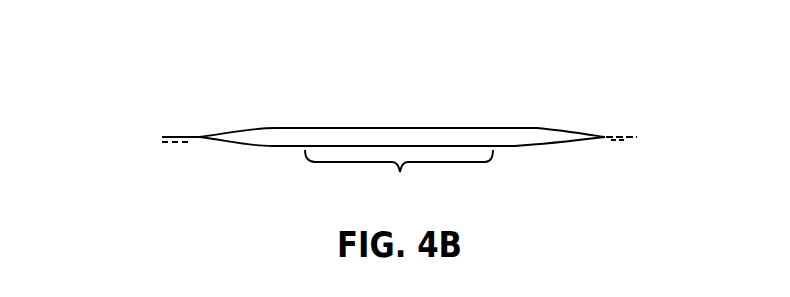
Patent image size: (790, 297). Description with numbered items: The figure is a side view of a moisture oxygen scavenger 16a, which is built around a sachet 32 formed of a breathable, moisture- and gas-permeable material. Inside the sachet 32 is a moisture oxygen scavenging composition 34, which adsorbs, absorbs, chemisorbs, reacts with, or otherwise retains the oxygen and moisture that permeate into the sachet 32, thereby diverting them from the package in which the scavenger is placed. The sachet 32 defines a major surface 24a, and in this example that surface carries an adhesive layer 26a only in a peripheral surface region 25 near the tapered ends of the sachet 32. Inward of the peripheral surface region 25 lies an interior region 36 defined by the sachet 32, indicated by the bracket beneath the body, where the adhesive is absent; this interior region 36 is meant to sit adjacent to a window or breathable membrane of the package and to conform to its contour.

The moisture oxygen scavenger 16a is at (150, 68).
The sachet 32 is at (328, 122).
The moisture oxygen scavenging composition 34 is at (408, 138).
The major surface 24a is at (507, 147).
The interior region 36 is at (399, 178).
The peripheral surface region 25 is at (615, 141).
The adhesive layer 26a is at (630, 142).